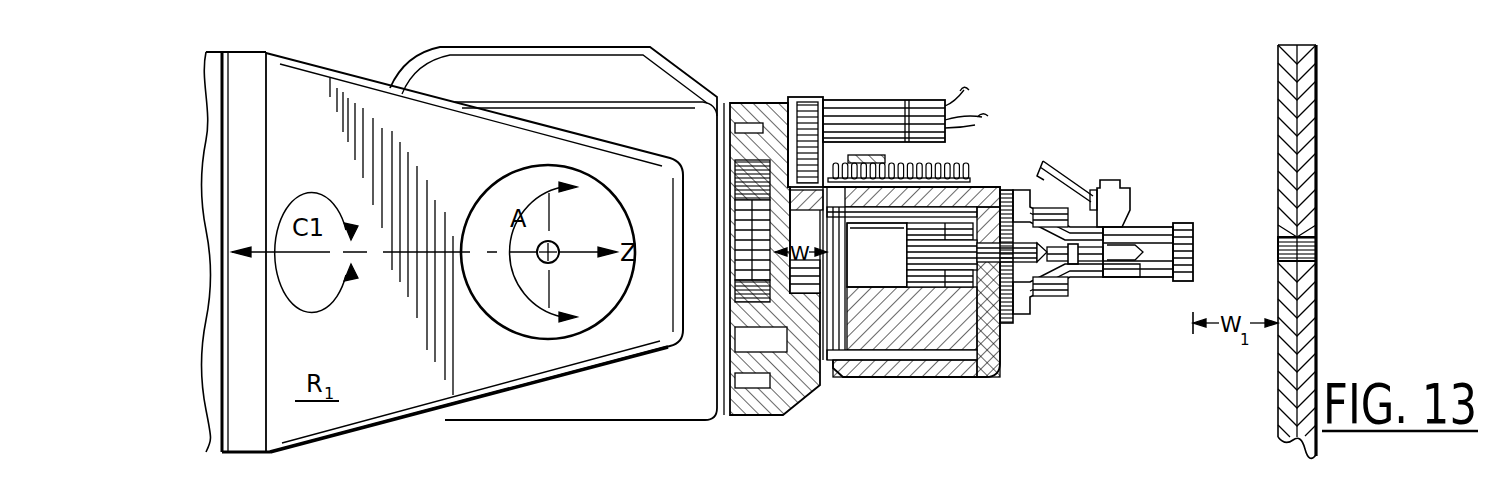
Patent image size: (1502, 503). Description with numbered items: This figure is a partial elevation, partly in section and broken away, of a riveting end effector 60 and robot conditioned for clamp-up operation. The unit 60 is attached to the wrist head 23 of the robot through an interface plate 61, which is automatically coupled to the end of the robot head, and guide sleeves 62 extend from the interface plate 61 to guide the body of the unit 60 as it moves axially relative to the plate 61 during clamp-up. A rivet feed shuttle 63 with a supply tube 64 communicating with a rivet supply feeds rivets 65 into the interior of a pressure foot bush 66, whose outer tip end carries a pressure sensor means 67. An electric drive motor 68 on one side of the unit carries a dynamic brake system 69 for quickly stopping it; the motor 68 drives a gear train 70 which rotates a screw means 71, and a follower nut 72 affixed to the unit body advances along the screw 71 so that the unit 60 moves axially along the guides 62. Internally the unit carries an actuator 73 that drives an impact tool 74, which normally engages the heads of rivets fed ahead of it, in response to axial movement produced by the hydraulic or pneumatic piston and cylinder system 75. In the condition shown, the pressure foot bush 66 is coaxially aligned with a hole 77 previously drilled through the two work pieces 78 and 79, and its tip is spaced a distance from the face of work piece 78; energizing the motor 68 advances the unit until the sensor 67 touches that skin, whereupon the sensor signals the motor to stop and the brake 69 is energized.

The wrist head 23 is at (552, 428).
The end effector 60 is at (994, 184).
The interface plate 61 is at (810, 402).
The guide sleeves 62 is at (912, 380).
The rivet feed shuttle 63 is at (1127, 202).
The supply tube 64 is at (1062, 172).
The rivets 65 is at (1160, 230).
The pressure foot bush 66 is at (1140, 272).
The pressure sensor means 67 is at (1193, 266).
The electric drive motor 68 is at (895, 97).
The dynamic brake system 69 is at (985, 127).
The gear train 70 is at (826, 98).
The screw means 71 is at (961, 164).
The follower nut 72 is at (858, 190).
The actuator 73 is at (1058, 266).
The impact tool 74 is at (1100, 270).
The hydraulic or pneumatic piston and cylinder system 75 is at (1017, 352).
The hole 77 is at (1318, 247).
The work piece 78 is at (1278, 111).
The work piece 79 is at (1319, 131).